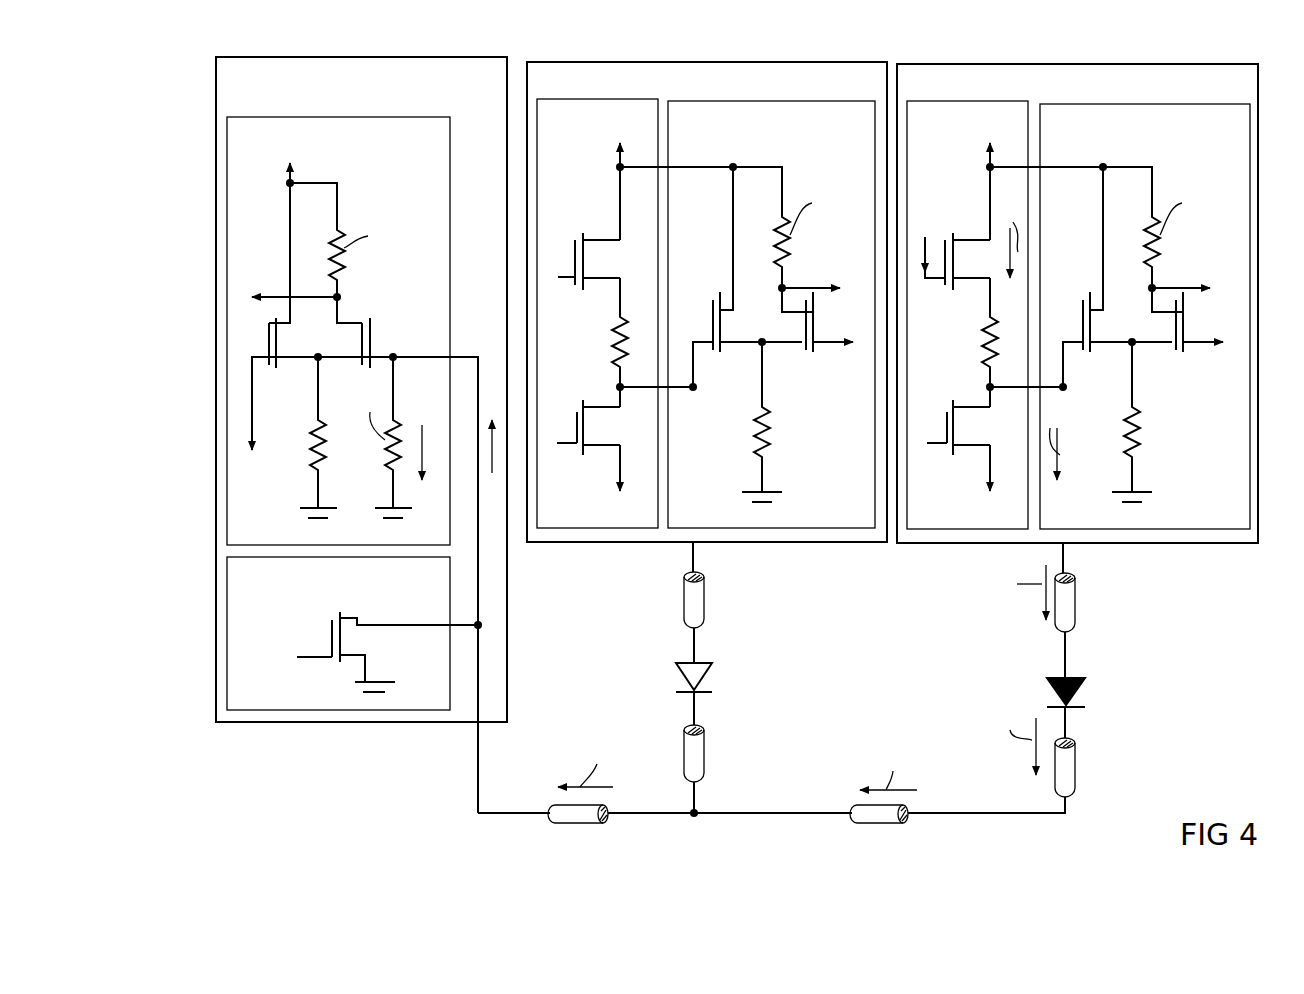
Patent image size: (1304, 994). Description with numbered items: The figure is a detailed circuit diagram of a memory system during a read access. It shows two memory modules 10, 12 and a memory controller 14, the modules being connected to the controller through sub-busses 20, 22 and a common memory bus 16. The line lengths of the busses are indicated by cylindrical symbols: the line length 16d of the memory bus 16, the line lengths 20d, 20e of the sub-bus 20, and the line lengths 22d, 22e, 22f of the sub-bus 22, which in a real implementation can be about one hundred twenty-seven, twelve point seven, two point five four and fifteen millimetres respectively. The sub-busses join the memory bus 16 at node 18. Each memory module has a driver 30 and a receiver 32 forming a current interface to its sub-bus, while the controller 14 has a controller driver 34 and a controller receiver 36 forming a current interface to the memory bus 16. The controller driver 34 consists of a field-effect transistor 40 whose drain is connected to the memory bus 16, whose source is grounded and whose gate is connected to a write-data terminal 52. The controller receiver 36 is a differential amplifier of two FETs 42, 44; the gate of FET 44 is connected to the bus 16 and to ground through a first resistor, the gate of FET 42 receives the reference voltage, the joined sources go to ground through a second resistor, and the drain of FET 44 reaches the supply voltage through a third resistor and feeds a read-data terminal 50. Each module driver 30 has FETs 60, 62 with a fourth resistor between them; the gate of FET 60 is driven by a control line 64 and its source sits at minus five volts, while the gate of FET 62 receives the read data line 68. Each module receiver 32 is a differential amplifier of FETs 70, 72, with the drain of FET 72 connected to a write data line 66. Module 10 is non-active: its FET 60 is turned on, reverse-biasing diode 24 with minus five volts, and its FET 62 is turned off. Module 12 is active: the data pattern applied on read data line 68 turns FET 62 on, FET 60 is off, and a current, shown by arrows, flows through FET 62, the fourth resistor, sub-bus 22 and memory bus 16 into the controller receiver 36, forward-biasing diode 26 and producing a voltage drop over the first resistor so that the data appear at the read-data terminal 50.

The memory module 10 is at (733, 62).
The memory module 12 is at (1095, 65).
The memory controller 14 is at (263, 57).
The memory bus 16 is at (478, 797).
The line length 16d is at (552, 825).
The bus node 18 is at (695, 817).
The sub-bus 20 is at (691, 677).
The line length 20d is at (705, 612).
The line length 20e is at (705, 775).
The sub-bus 22 is at (780, 815).
The line length 22d is at (1077, 615).
The line length 22e is at (1076, 782).
The line length 22f is at (870, 828).
The diode 24 is at (712, 688).
The diode 26 is at (1085, 690).
The driver 30 is at (800, 270).
The receiver 32 is at (935, 269).
The controller driver 34 is at (315, 633).
The controller receiver 36 is at (322, 465).
The field-effect transistor 40 is at (345, 612).
The FET 42 is at (280, 368).
The FET 44 is at (372, 318).
The read-data terminal 50 is at (272, 300).
The write-data terminal 52 is at (302, 672).
The FET 60 is at (588, 455).
The FET 62 is at (595, 290).
The control line 64 is at (568, 443).
The write data line 66 is at (1004, 270).
The read data line 68 is at (578, 287).
The FET 70 is at (706, 300).
The FET 72 is at (812, 352).